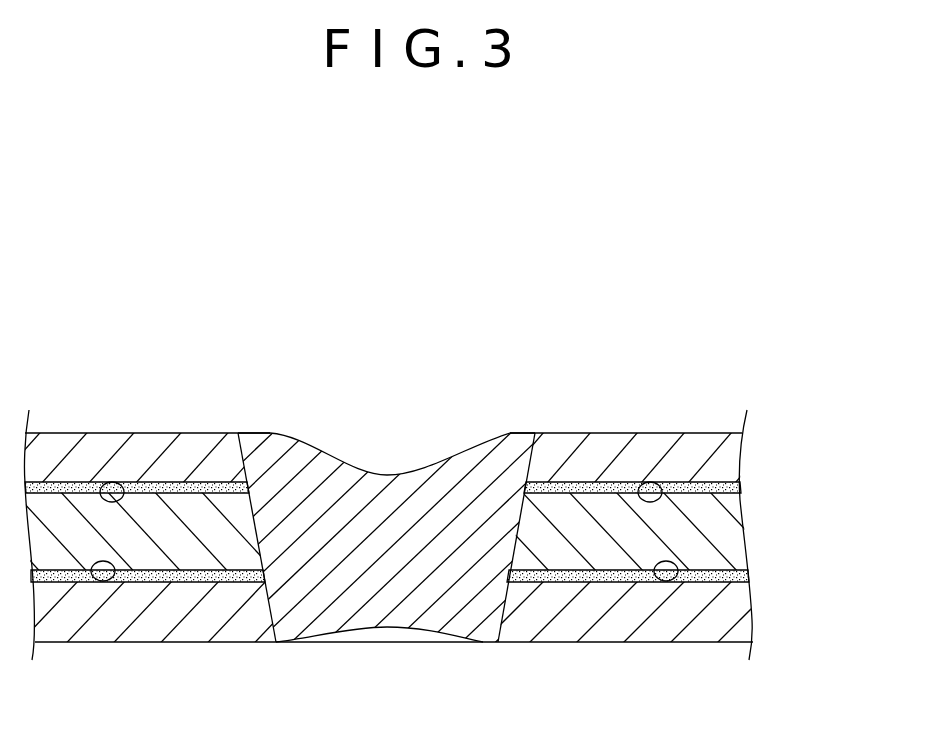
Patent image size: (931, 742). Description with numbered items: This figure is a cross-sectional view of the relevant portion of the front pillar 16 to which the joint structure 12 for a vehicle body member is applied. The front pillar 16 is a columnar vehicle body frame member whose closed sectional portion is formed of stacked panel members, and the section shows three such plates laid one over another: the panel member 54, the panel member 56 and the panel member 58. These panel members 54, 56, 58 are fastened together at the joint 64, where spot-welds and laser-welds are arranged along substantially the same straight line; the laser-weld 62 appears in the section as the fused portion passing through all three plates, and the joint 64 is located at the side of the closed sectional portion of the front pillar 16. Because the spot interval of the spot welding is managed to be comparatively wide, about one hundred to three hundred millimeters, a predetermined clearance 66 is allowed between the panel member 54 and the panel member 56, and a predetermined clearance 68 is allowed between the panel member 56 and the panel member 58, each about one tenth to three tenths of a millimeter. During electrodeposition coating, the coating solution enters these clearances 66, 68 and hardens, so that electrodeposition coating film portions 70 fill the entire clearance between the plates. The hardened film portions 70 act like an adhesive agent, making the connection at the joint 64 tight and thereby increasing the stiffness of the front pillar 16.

The joint structure 12 is at (728, 330).
The front pillar 16 is at (730, 407).
The panel member 54 is at (730, 615).
The panel member 56 is at (730, 537).
The panel member 58 is at (730, 458).
The laser-weld 62 is at (405, 502).
The joint 64 is at (333, 453).
The predetermined clearance 66 is at (95, 582).
The predetermined clearance 68 is at (108, 482).
The electrodeposition coating film portion 70 is at (199, 482).